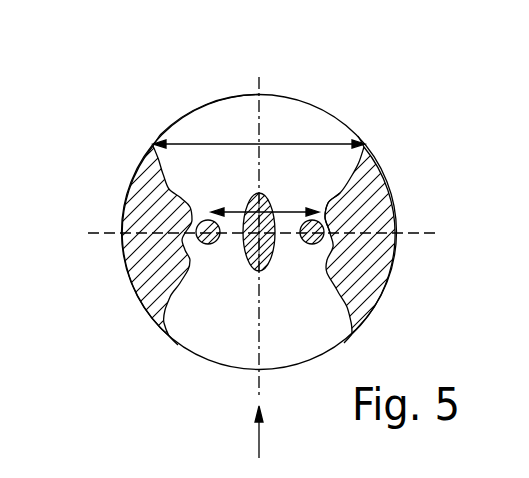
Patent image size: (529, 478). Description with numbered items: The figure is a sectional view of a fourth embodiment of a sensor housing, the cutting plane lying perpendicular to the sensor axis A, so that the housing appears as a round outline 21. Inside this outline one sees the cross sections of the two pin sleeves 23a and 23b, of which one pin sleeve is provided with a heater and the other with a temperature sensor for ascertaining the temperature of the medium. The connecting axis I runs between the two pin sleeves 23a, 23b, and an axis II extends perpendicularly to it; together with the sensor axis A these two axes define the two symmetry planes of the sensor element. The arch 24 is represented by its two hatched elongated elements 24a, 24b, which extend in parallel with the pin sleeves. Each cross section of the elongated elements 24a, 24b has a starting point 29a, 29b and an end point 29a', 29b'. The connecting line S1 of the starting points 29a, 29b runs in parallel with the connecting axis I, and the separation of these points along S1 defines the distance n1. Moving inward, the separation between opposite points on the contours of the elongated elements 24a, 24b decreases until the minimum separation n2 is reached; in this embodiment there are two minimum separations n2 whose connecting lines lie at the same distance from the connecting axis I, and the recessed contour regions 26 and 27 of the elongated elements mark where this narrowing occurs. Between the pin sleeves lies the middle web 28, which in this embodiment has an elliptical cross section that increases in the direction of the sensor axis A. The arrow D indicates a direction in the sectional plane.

The rotor disc 21 is at (367, 121).
The pin sleeve 23a is at (208, 244).
The pin sleeve 23b is at (312, 244).
The arch 24 is at (143, 200).
The elongated element 24a is at (146, 263).
The elongated element 24b is at (365, 268).
The recess 26 is at (326, 210).
The second hatched wall section 27 is at (330, 262).
The middle web 28 is at (247, 192).
The starting point 29a is at (101, 150).
The starting point 29b is at (415, 144).
The end point 29a' is at (110, 351).
The end point 29b' is at (409, 354).
The connecting line S1 is at (198, 144).
The distance n1 is at (283, 143).
The minimum separation n2 is at (281, 209).
The sensor axis A is at (247, 264).
The direction arrow D is at (268, 433).
The connecting axis I is at (254, 234).
The axis II is at (258, 216).